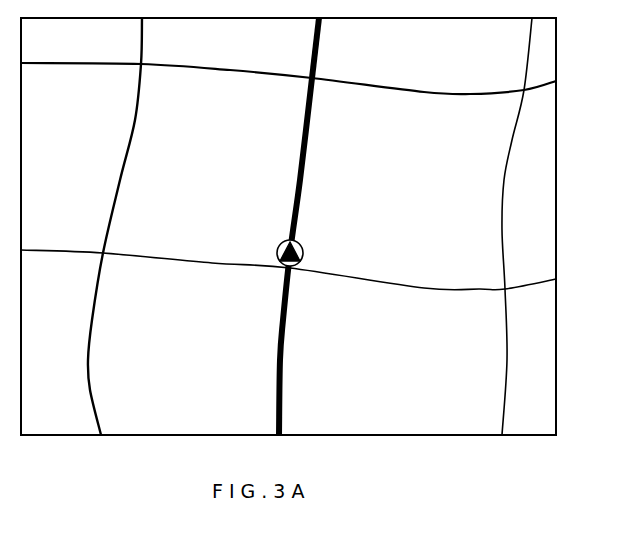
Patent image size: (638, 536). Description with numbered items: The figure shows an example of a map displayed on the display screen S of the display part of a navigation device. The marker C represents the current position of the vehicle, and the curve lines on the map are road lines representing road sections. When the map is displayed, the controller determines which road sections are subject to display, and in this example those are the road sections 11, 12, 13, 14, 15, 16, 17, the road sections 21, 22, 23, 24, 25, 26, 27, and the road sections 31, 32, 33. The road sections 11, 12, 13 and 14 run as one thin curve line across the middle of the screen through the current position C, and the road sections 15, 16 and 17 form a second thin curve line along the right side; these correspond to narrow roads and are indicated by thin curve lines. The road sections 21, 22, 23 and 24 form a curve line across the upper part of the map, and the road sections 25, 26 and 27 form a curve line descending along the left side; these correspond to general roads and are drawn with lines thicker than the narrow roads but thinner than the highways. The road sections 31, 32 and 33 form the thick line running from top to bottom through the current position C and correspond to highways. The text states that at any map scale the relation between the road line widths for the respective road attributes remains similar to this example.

The road section 11 is at (77, 250).
The road section 12 is at (245, 263).
The road section 13 is at (424, 287).
The road section 14 is at (530, 282).
The road section 15 is at (525, 65).
The road section 16 is at (504, 163).
The road section 17 is at (505, 391).
The road section 21 is at (100, 62).
The road section 22 is at (259, 68).
The road section 23 is at (424, 90).
The road section 24 is at (554, 82).
The road section 25 is at (145, 50).
The road section 26 is at (125, 158).
The road section 27 is at (90, 388).
The road section 31 is at (320, 53).
The road section 32 is at (300, 162).
The road section 33 is at (278, 393).
The current position C is at (305, 258).
The display screen S is at (458, 437).